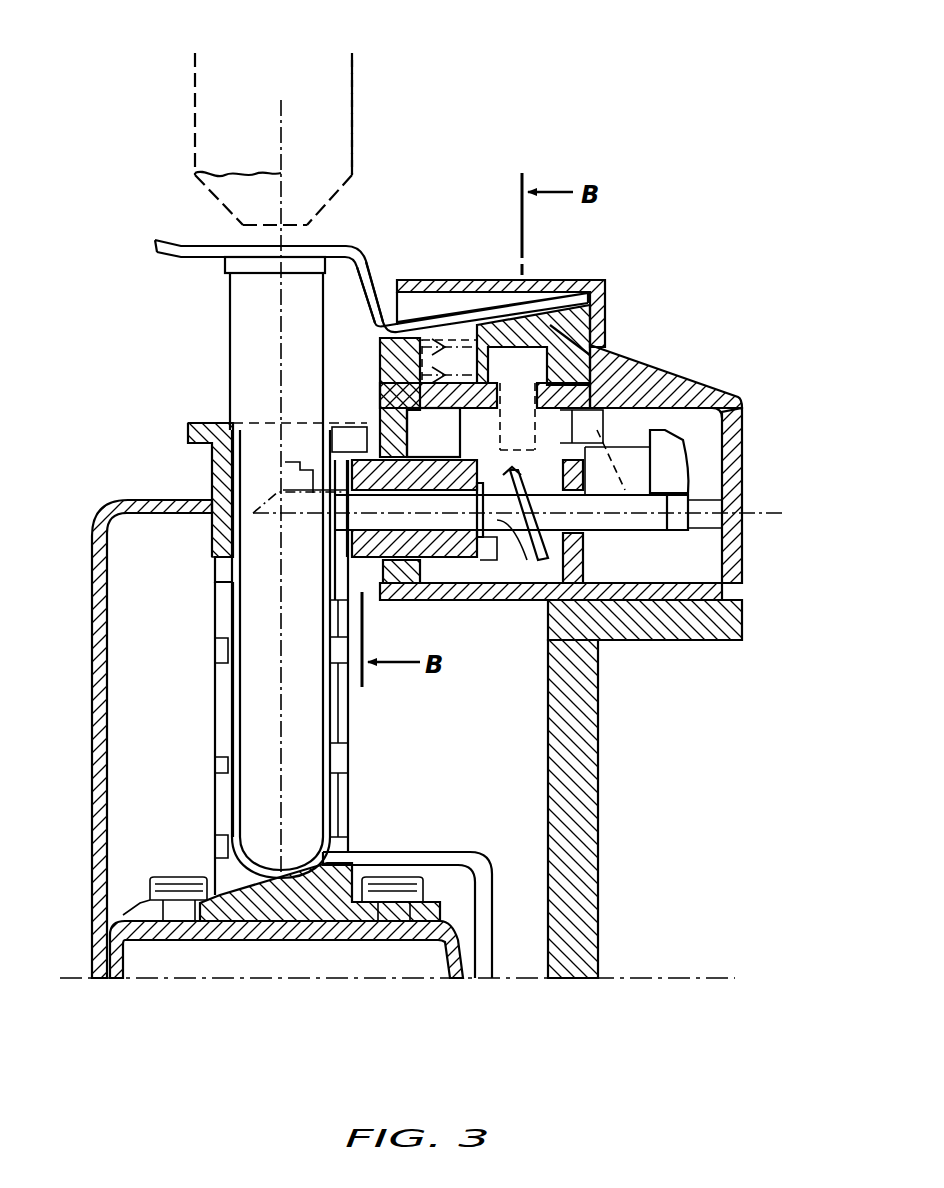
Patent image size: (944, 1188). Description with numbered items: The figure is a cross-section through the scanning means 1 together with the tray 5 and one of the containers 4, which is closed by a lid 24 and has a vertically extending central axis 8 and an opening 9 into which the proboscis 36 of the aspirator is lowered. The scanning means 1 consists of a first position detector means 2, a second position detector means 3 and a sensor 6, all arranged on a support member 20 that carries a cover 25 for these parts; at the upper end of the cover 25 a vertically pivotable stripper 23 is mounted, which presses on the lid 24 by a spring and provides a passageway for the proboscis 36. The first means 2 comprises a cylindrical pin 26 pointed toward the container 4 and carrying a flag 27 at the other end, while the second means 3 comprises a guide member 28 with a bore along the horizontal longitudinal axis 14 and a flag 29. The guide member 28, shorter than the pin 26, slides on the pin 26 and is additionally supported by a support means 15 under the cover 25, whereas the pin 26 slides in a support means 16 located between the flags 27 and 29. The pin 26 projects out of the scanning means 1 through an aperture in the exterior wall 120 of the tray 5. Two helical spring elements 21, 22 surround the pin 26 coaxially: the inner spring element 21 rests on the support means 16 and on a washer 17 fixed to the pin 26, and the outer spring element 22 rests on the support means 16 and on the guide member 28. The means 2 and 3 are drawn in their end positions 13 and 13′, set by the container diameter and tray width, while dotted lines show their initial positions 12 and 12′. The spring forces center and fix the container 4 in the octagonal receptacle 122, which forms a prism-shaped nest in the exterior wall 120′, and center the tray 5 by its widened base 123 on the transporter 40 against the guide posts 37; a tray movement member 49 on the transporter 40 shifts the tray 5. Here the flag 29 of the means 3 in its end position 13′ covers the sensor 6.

The scanning means 1 is at (744, 424).
The first position detector means 2 is at (688, 466).
The second position detector means 3 is at (440, 447).
The container 4 is at (252, 687).
The tray 5 is at (213, 737).
The sensor 6 is at (598, 314).
The central axis 8 is at (195, 173).
The opening 9 is at (230, 272).
The initial position 12 is at (213, 533).
The initial position 12′ is at (320, 470).
The end position 13 is at (323, 513).
The end position 13′ is at (323, 460).
The longitudinal axis 14 is at (762, 509).
The support means 15 is at (415, 600).
The support means 16 is at (583, 537).
The washer 17 is at (510, 590).
The support member 20 is at (745, 618).
The inner spring element 21 is at (600, 642).
The outer spring element 22 is at (583, 558).
The stripper 23 is at (373, 280).
The lid 24 is at (307, 262).
The cover 25 is at (572, 282).
The cylindrical pin 26 is at (742, 533).
The flag 27 is at (677, 406).
The guide member 28 is at (480, 572).
The flag 29 is at (565, 325).
The proboscis 36 is at (352, 170).
The guide posts 37 is at (110, 931).
The transporter 40 is at (318, 955).
The tray movement member 49 is at (485, 945).
The exterior wall 120 is at (350, 722).
The exterior wall 120′ is at (230, 803).
The receptacle 122 is at (350, 688).
The widened base 123 is at (222, 912).